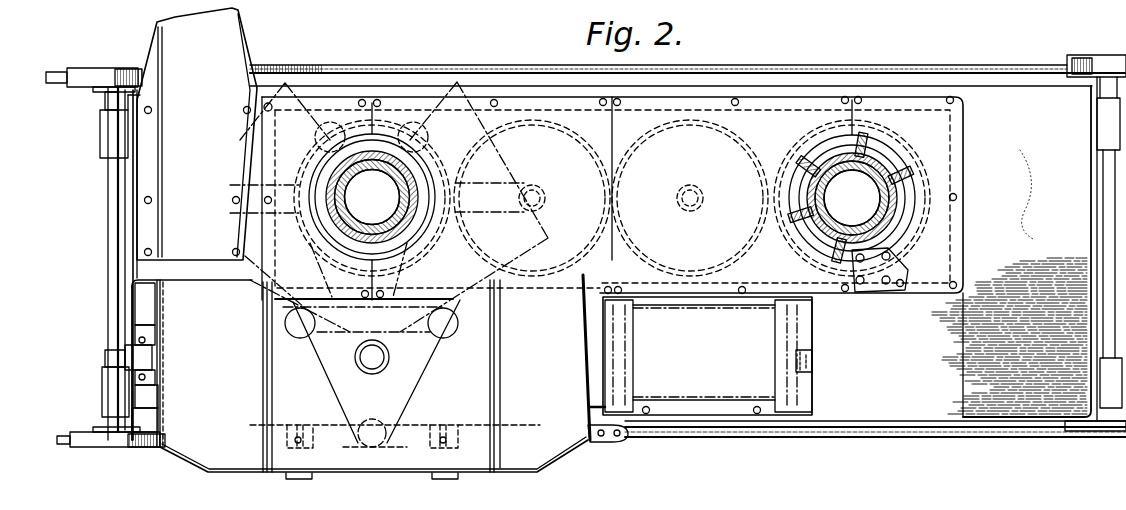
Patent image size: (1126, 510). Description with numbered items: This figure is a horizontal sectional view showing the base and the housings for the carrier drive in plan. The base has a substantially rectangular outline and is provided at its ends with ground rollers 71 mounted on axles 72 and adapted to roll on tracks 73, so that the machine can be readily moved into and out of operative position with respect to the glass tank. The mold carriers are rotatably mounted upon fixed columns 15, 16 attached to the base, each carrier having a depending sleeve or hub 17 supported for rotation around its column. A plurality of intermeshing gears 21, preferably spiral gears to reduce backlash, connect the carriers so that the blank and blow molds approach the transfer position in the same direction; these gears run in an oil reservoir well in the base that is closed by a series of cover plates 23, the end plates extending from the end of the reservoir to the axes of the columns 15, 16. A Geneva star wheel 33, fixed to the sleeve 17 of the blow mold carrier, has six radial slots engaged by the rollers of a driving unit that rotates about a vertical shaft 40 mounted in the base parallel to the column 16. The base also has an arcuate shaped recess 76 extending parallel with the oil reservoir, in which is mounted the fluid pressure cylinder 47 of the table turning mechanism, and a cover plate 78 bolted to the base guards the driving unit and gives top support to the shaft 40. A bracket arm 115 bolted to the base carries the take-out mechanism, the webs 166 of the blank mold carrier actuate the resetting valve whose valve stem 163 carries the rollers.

The ground rollers 71 is at (92, 70).
The axles 72 is at (112, 238).
The tracks 73 is at (798, 65).
The bracket arm 115 is at (192, 134).
The cover plates 23 is at (940, 238).
The intermeshing gears 21 is at (470, 153).
The Geneva star wheel 33 is at (502, 254).
The fixed column 16 is at (357, 230).
The fixed column 15 is at (838, 228).
The webs 166 is at (830, 148).
The depending sleeve or hub 17 is at (410, 240).
The cover plate 78 is at (380, 377).
The vertical shaft 40 is at (385, 357).
The arcuate shaped recess 76 is at (802, 328).
The fluid pressure cylinder 47 is at (800, 385).
The valve stem 163 is at (880, 282).